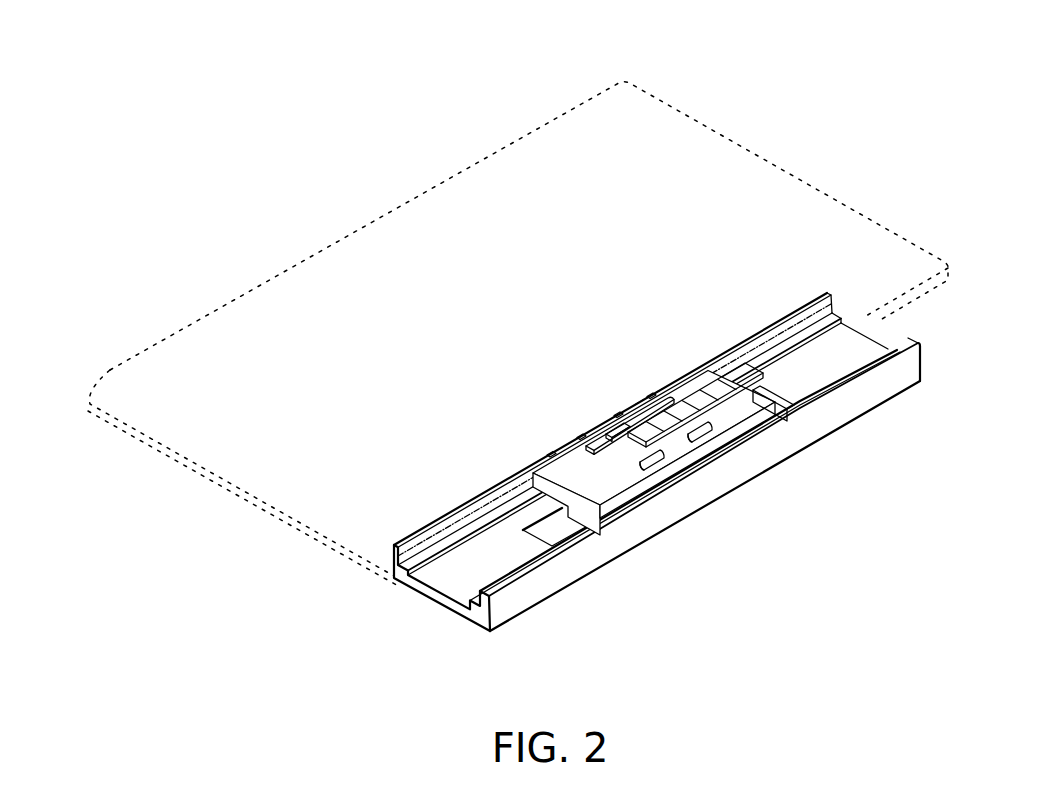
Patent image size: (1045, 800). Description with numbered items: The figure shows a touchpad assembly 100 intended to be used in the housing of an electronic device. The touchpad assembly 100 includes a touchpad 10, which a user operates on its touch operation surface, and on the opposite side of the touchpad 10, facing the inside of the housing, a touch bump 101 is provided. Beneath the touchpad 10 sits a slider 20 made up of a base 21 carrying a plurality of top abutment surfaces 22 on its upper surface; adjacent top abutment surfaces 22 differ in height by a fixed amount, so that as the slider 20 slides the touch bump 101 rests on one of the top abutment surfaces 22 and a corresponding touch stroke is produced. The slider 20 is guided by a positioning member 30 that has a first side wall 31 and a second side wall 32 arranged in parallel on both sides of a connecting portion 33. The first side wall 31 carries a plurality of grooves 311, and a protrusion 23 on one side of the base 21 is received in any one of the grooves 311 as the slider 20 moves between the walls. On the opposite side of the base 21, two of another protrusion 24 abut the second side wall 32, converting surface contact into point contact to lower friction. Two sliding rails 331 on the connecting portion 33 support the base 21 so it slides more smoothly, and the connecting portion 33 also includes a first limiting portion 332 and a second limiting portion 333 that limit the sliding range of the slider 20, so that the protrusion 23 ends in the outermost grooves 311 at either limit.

The touchpad assembly 100 is at (927, 104).
The touchpad 10 is at (786, 180).
The touch bump 101 is at (648, 394).
The slider 20 is at (800, 523).
The base 21 is at (672, 481).
The top abutment surfaces 22 is at (597, 530).
The protrusion 23 is at (618, 426).
The another protrusion 24 is at (662, 470).
The positioning member 30 is at (310, 593).
The first side wall 31 is at (392, 560).
The grooves 311 is at (615, 416).
The second side wall 32 is at (503, 617).
The connecting portion 33 is at (447, 588).
The sliding rails 331 is at (485, 545).
The first limiting portion 332 is at (537, 573).
The second limiting portion 333 is at (785, 422).